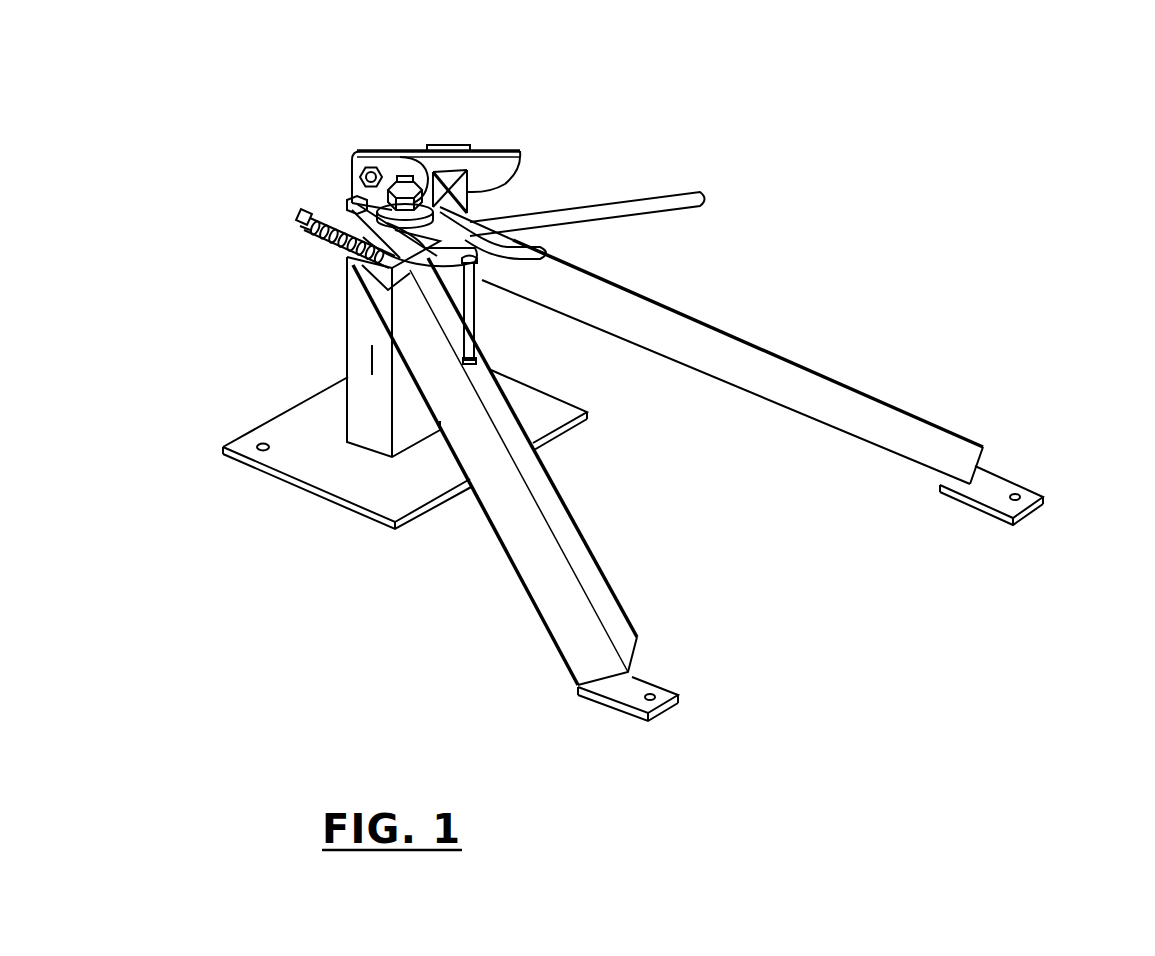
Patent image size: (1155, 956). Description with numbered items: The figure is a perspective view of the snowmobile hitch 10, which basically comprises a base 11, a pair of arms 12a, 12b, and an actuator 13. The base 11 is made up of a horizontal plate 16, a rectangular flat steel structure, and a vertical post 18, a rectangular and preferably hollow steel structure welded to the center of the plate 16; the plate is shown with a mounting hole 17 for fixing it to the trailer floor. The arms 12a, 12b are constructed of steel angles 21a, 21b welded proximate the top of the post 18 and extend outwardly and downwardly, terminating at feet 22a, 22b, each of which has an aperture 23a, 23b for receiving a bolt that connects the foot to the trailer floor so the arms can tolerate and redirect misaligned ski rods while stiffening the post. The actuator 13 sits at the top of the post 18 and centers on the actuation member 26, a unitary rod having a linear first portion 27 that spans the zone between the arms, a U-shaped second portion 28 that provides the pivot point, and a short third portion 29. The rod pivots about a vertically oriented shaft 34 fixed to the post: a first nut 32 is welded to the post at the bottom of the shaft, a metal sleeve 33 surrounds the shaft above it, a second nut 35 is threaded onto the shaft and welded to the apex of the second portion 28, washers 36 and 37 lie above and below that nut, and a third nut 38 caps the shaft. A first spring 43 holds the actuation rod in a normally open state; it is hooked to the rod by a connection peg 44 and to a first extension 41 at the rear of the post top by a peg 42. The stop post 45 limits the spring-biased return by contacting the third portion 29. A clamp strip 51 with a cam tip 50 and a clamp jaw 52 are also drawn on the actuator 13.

The snowmobile hitch 10 is at (736, 139).
The base 11 is at (294, 360).
The arm 12a is at (787, 391).
The arm 12b is at (562, 521).
The actuator 13 is at (485, 130).
The horizontal plate 16 is at (356, 490).
The mounting hole 17 is at (258, 452).
The vertical post 18 is at (362, 317).
The steel angle 21a is at (835, 417).
The steel angle 21b is at (606, 606).
The foot 22a is at (990, 493).
The foot 22b is at (623, 692).
The aperture 23a is at (1018, 497).
The aperture 23b is at (655, 697).
The actuation member 26 is at (657, 243).
The first portion 27 is at (652, 205).
The second portion 28 is at (345, 205).
The third portion 29 is at (403, 275).
The first nut 32 is at (392, 328).
The metal sleeve 33 is at (543, 247).
The shaft 34 is at (366, 148).
The second nut 35 is at (300, 232).
The washer 36 is at (477, 258).
The washer 37 is at (399, 176).
The third nut 38 is at (350, 162).
The first extension 41 is at (345, 206).
The peg 42 is at (298, 215).
The first spring 43 is at (342, 256).
The connection peg 44 is at (347, 292).
The stop post 45 is at (478, 352).
The cam tip 50 is at (522, 147).
The clamp strip 51 is at (454, 145).
The clamp jaw 52 is at (530, 187).